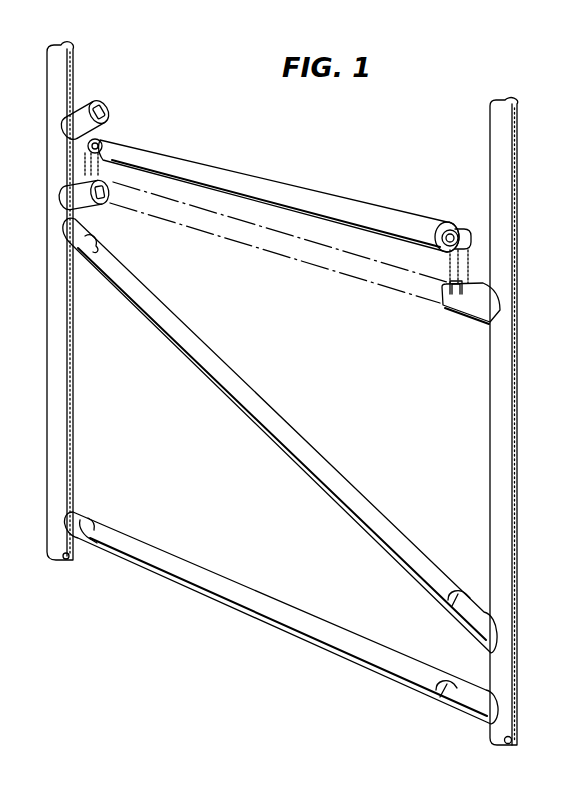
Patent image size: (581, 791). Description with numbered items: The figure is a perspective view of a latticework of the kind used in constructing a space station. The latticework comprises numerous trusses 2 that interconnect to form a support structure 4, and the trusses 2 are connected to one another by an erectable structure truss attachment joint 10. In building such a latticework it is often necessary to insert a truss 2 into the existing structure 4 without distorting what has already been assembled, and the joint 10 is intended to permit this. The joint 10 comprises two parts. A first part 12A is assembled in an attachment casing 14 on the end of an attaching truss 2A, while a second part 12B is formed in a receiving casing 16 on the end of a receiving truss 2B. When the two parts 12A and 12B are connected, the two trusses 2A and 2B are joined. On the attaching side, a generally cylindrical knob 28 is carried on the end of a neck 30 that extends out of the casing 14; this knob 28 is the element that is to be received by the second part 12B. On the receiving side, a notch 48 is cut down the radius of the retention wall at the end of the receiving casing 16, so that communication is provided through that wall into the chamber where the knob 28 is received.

The truss 2 is at (508, 433).
The attaching truss 2A is at (279, 196).
The receiving truss 2B is at (496, 316).
The support structure 4 is at (130, 606).
The erectable structure truss attachment joint 10 is at (110, 244).
The first part 12A is at (466, 205).
The second part 12B is at (433, 295).
The attachment casing 14 is at (373, 205).
The receiving casing 16 is at (470, 308).
The knob 28 is at (98, 142).
The neck 30 is at (100, 147).
The notch 48 is at (105, 107).